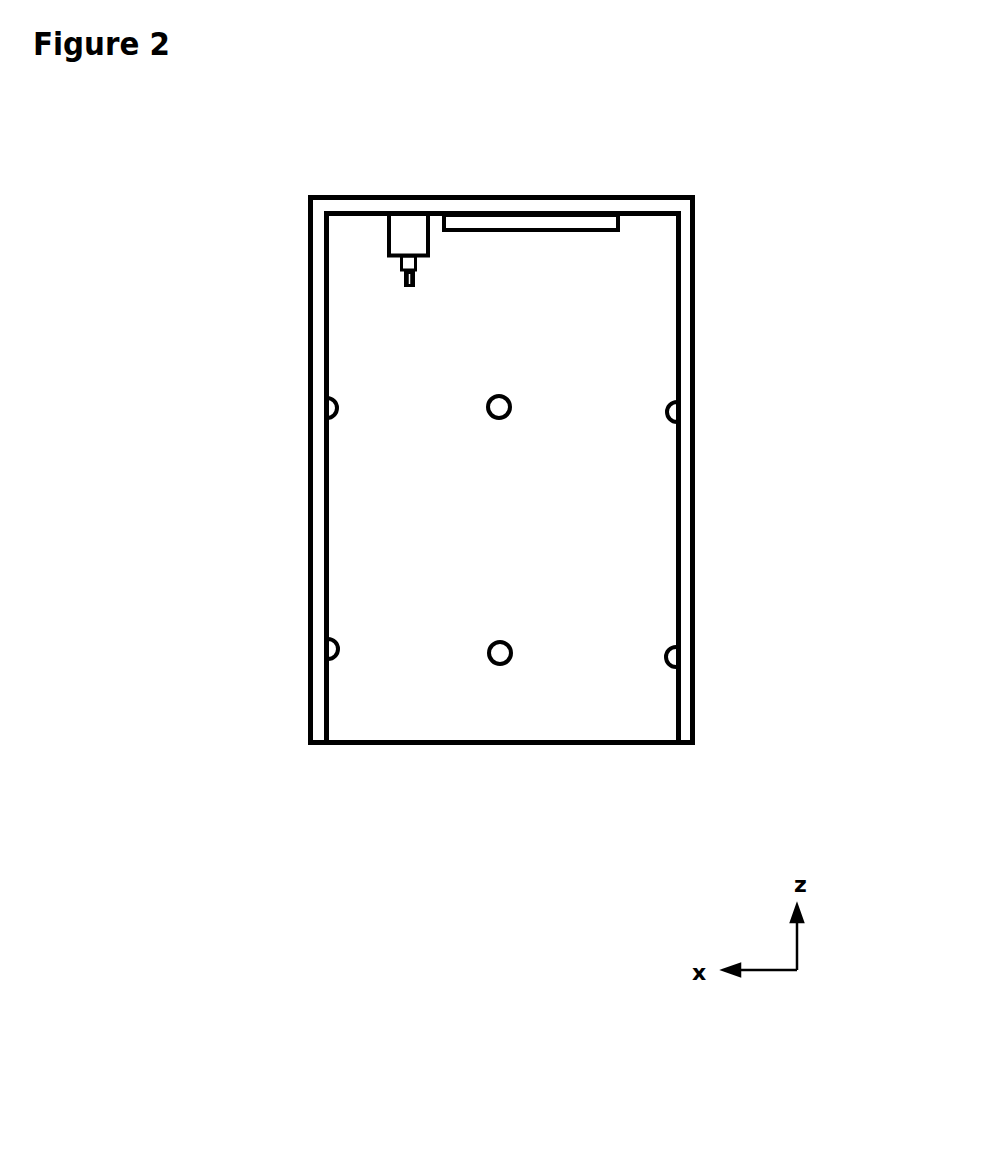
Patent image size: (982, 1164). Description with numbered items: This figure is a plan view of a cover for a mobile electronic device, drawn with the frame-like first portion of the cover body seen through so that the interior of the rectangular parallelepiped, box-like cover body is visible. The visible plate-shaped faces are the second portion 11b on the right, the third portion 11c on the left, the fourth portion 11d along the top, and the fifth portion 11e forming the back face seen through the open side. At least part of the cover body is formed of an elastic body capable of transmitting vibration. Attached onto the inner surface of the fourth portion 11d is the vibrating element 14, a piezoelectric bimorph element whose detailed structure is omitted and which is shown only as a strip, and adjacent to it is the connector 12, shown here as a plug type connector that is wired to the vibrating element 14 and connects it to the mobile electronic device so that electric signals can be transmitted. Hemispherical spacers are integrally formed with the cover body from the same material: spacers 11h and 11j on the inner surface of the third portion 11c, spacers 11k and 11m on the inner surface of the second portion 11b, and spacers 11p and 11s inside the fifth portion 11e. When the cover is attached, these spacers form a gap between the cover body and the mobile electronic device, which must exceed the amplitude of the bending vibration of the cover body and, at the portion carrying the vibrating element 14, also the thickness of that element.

The second portion 11b is at (687, 524).
The third portion 11c is at (317, 517).
The fourth portion 11d is at (521, 200).
The fifth portion 11e is at (620, 358).
The spacer 11h is at (333, 408).
The spacer 11j is at (333, 647).
The spacer 11k is at (672, 410).
The spacer 11m is at (672, 657).
The spacer 11p is at (506, 397).
The spacer 11s is at (510, 652).
The connector 12 is at (412, 223).
The vibrating element 14 is at (588, 223).